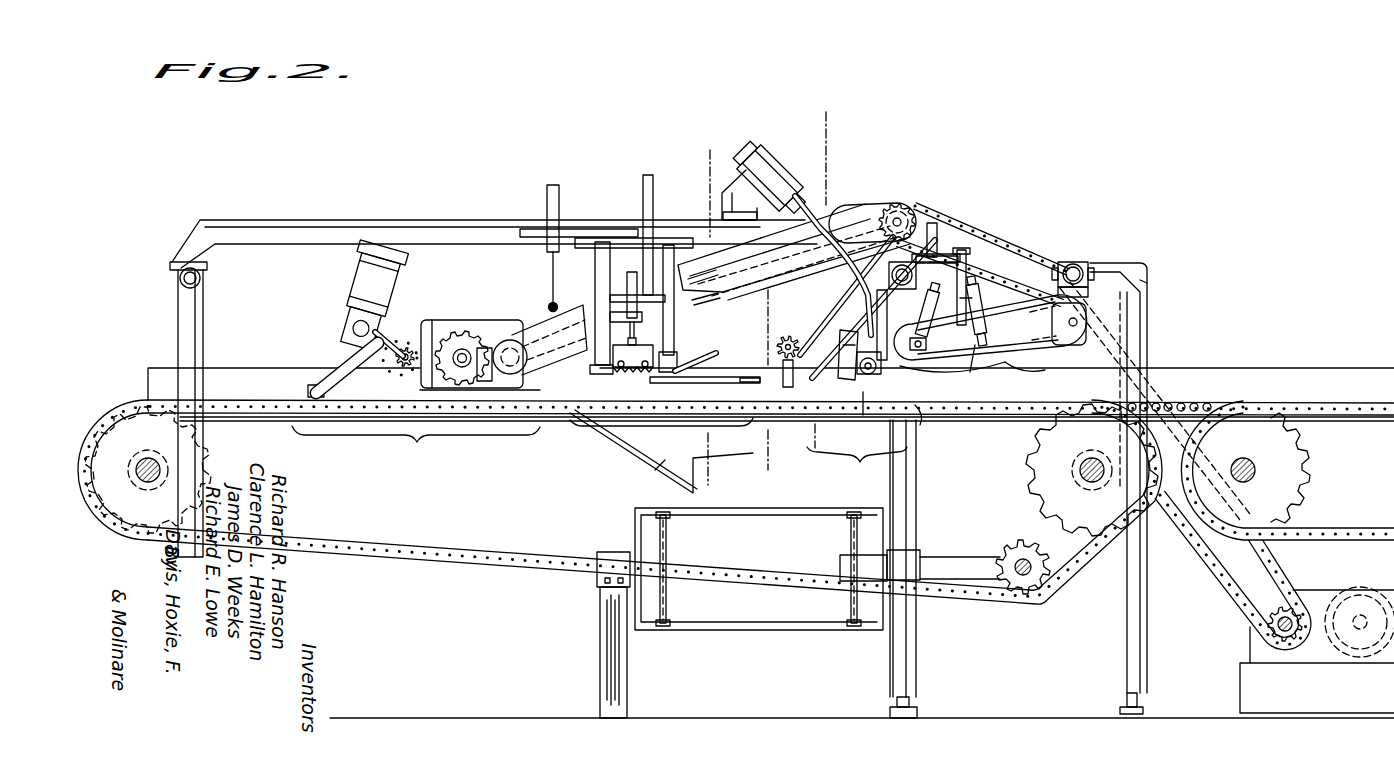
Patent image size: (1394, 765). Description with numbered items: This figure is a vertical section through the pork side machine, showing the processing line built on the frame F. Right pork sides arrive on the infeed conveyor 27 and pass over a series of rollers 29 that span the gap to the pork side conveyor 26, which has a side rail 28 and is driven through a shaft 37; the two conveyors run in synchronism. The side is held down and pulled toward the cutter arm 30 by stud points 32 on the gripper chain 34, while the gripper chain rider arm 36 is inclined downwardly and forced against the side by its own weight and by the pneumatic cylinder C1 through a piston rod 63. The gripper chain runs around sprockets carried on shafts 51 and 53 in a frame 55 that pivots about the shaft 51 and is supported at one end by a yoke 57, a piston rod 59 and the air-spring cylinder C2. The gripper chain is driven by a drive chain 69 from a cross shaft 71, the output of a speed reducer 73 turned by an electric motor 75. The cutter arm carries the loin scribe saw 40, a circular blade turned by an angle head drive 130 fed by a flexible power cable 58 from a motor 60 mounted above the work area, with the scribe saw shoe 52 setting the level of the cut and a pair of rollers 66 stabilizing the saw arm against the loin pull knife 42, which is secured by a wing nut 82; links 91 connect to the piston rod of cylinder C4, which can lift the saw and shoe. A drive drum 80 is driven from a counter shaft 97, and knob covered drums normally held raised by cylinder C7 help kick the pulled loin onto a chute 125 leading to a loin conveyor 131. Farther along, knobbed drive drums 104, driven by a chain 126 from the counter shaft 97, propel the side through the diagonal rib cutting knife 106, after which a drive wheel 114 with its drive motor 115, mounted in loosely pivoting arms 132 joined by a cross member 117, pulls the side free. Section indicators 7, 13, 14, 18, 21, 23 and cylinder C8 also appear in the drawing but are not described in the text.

The section line 7- 7 is at (838, 96).
The feed conveyor section 13 is at (857, 467).
The section line 14-14 / chute 14 is at (780, 296).
The section line 18- 18 is at (690, 165).
The conveyor section 21 is at (661, 438).
The conveyor section 23 is at (416, 447).
The pork side conveyor 26 is at (433, 543).
The infeed conveyor 27 is at (1302, 400).
The side rail 28 is at (1247, 372).
The rollers 29 is at (1193, 393).
The cutter arm 30 is at (829, 364).
The stud points 32 is at (1073, 264).
The gripper chain 34 is at (1000, 355).
The gripper chain rider arm 36 is at (1015, 368).
The shaft 37 is at (163, 463).
The loin scribe saw 40 is at (872, 375).
The loin pull knife 42 is at (842, 410).
The shaft 51 is at (1147, 283).
The scribe saw shoe 52 is at (905, 368).
The shaft 53 is at (926, 345).
The frame 55 is at (1148, 312).
The yoke 57 is at (932, 310).
The flexible power cable 58 is at (822, 240).
The piston rod 59 is at (927, 267).
The motor 60 is at (767, 163).
The piston rod 63 is at (975, 350).
The rollers 66 is at (863, 400).
The drive chain 69 is at (1203, 563).
The cross shaft 71 is at (1273, 623).
The speed reducer 73 is at (1303, 647).
The electric motor 75 is at (1352, 602).
The drive drum 80 is at (790, 339).
The wing nut 82 is at (840, 320).
The links 91 is at (980, 277).
The counter shaft 97 is at (898, 216).
The knobbed drive drums 104 is at (493, 340).
The rib cutting knife 106 is at (425, 388).
The drive wheel 114 is at (390, 372).
The drive motor 115 is at (393, 300).
The cross member 117 is at (388, 324).
The chute 125 is at (655, 468).
The chain 126 is at (702, 308).
The angle head drive 130 is at (920, 412).
The loin conveyor 131 is at (768, 510).
The arm 132 is at (350, 358).
The pneumatic cylinder C1 is at (1022, 270).
The pneumatic cylinder C2 is at (950, 230).
The cylinder C4 is at (935, 309).
The cylinder C7 is at (628, 278).
The cylinder C8 is at (547, 192).
The frame F is at (200, 308).